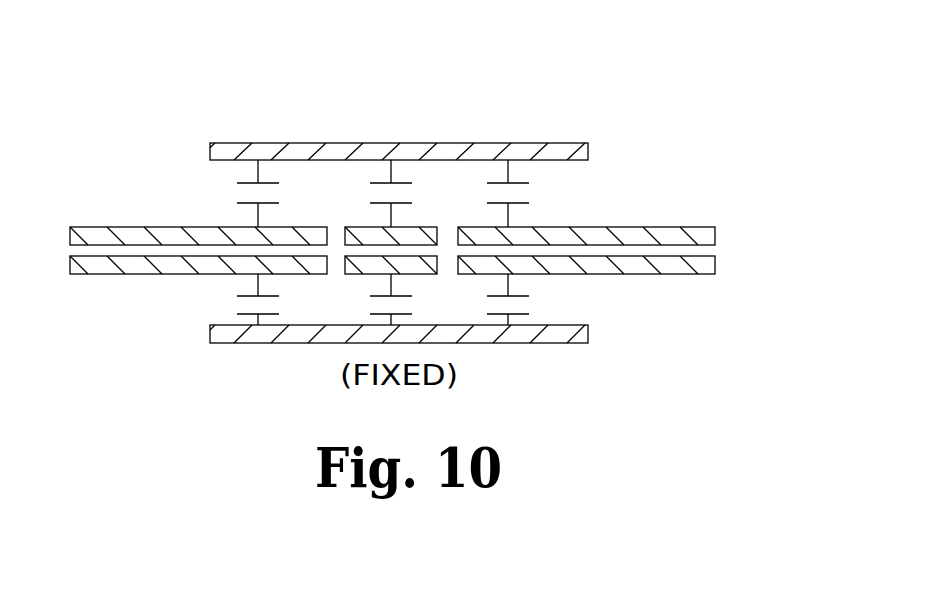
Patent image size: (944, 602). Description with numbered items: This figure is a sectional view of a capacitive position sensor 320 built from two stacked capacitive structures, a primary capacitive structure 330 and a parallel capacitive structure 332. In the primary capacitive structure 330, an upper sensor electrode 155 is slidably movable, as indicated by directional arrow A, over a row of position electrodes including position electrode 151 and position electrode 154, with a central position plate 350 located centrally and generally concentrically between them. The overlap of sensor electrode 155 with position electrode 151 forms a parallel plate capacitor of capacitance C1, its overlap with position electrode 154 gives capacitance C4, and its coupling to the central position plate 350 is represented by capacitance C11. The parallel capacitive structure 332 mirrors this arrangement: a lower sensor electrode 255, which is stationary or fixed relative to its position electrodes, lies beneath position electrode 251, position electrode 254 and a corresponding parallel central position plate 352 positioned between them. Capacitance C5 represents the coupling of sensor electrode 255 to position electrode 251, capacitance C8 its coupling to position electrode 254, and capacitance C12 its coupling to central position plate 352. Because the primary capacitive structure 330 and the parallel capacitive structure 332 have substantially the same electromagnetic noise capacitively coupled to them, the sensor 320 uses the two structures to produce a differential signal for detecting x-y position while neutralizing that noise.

The capacitive position sensor 320 is at (307, 77).
The sensor electrode 155 is at (583, 143).
The sensor electrode 255 is at (565, 343).
The position electrode 151 is at (97, 227).
The position electrode 251 is at (72, 274).
The central position plate 350 is at (375, 242).
The central position plate 352 is at (360, 275).
The position electrode 154 is at (703, 227).
The position electrode 254 is at (700, 273).
The primary capacitive structure 330 is at (740, 231).
The parallel capacitive structure 332 is at (740, 268).
The directional arrow A is at (333, 128).
The capacitance C1 is at (237, 193).
The capacitance C11 is at (421, 193).
The capacitance C4 is at (532, 193).
The capacitance C5 is at (237, 301).
The capacitance C12 is at (423, 300).
The capacitance C8 is at (532, 300).